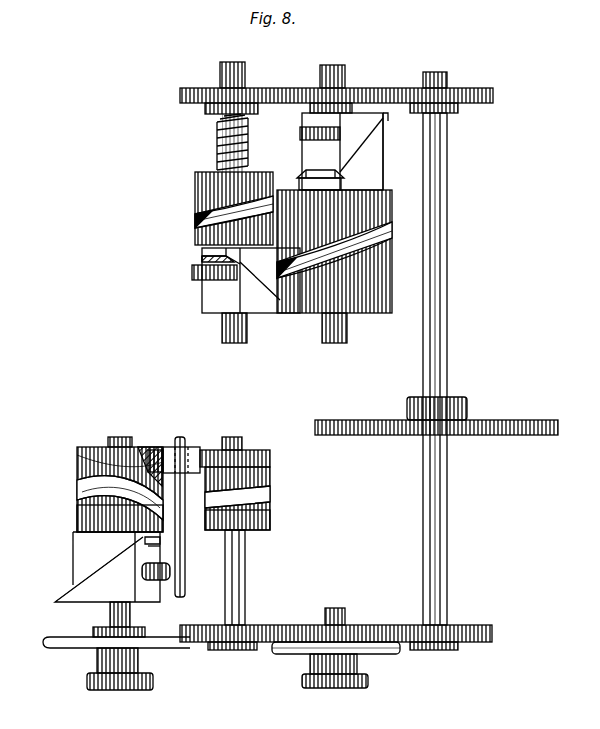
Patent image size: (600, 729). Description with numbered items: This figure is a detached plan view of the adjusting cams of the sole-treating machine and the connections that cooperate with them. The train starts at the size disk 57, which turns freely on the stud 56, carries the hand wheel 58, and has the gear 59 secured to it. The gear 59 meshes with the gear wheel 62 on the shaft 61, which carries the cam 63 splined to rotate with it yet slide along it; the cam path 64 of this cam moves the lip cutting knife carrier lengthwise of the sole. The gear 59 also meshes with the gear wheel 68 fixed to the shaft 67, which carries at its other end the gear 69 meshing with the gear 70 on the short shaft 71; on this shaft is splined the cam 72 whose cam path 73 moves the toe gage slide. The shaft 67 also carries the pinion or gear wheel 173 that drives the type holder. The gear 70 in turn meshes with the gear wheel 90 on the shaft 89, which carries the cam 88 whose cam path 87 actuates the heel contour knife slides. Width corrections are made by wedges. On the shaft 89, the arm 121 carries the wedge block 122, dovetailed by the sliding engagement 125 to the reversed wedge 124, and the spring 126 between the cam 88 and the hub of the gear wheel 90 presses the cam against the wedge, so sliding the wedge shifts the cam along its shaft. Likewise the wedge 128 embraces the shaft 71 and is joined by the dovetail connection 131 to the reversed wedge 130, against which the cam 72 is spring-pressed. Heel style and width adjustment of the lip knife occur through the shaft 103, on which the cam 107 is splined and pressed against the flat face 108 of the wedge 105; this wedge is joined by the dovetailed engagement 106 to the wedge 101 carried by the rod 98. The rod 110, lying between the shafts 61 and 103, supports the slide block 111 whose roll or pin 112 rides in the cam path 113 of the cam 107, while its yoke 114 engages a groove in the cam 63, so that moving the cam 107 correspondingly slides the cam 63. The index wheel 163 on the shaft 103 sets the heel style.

The stud 56 is at (340, 608).
The size disk 57 is at (300, 655).
The hand wheel 58 is at (342, 688).
The gear 59 is at (318, 625).
The shaft 61 is at (246, 578).
The gear wheel 62 is at (216, 625).
The cam 63 is at (272, 520).
The cam path 64 is at (272, 494).
The shaft 67 is at (447, 244).
The gear wheel 68 is at (462, 650).
The gear 69 is at (460, 108).
The gear 70 is at (318, 88).
The short shaft 71 is at (334, 65).
The cam 72 is at (386, 210).
The cam path 73 is at (380, 236).
The cam path 87 is at (196, 214).
The cam 88 is at (196, 180).
The shaft 89 is at (238, 56).
The gear wheel 90 is at (192, 88).
The rod 98 is at (166, 582).
The wedge 101 is at (74, 580).
The shaft 103 is at (118, 437).
The wedge 105 is at (82, 545).
The dovetailed sliding engagement 106 is at (148, 546).
The cam 107 is at (78, 458).
The flat face 108 is at (78, 521).
The rod 110 is at (185, 572).
The collar or slide block 111 is at (176, 447).
The roll or pin 112 is at (160, 448).
The cam path 113 is at (84, 490).
The yoke 114 is at (232, 437).
The arm 121 is at (192, 274).
The wedge block 122 is at (210, 299).
The wedge 124 is at (264, 274).
The sliding dovetailed engagement 125 is at (200, 258).
The spring 126 is at (218, 130).
The wedge 128 is at (368, 128).
The wedge 130 is at (374, 158).
The dovetail sliding connection 131 is at (318, 168).
The index wheel 163 is at (66, 650).
The pinion or gear wheel 173 is at (508, 424).